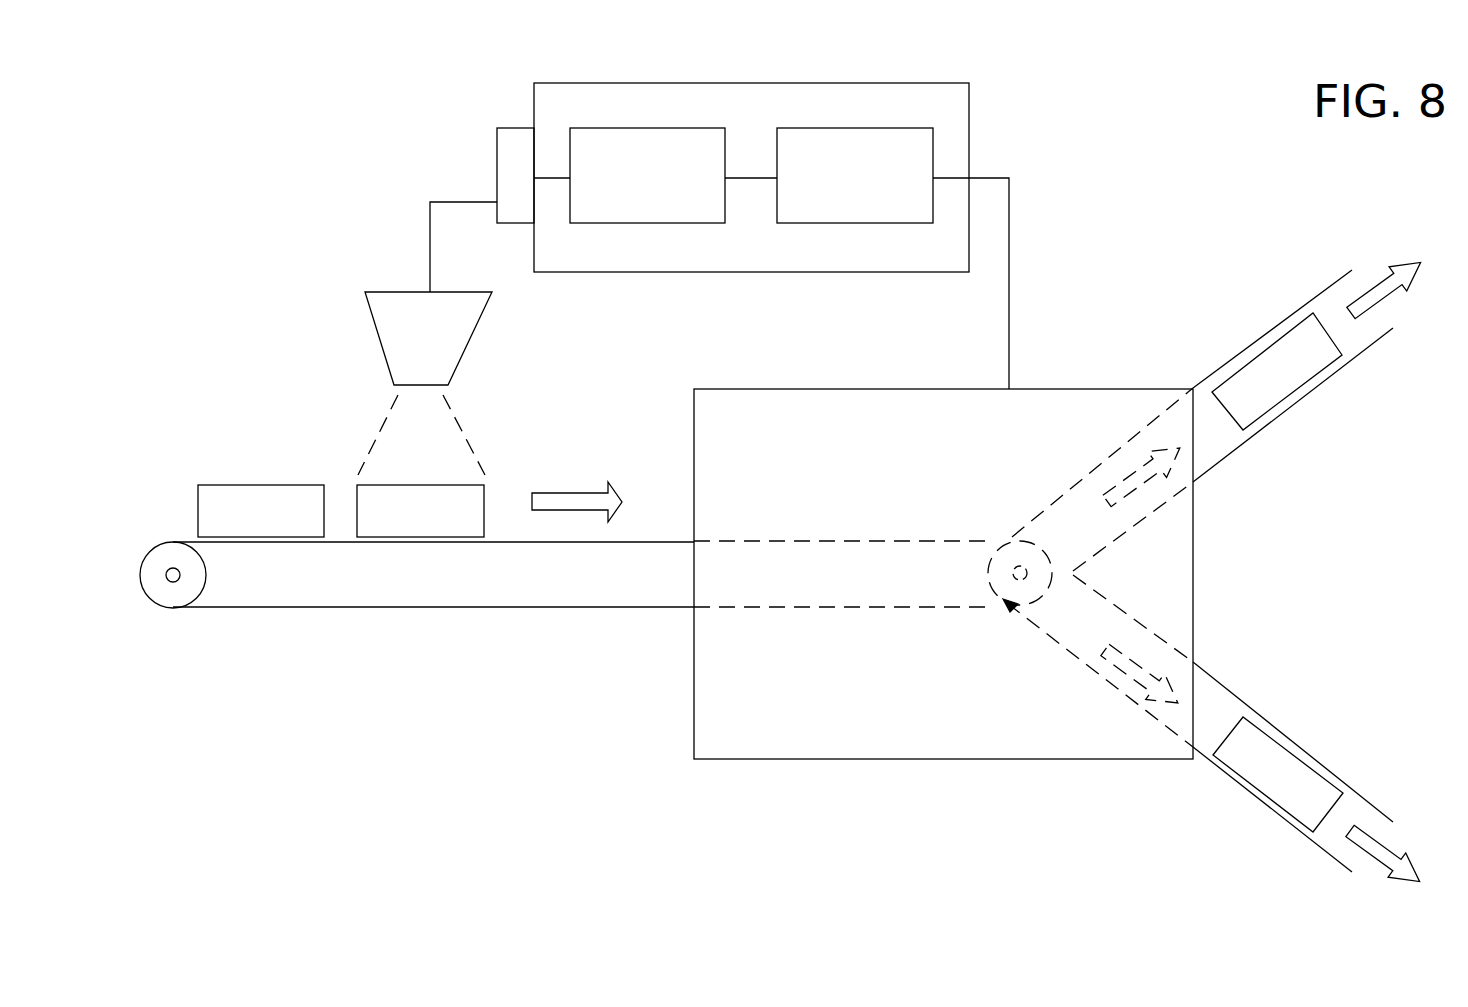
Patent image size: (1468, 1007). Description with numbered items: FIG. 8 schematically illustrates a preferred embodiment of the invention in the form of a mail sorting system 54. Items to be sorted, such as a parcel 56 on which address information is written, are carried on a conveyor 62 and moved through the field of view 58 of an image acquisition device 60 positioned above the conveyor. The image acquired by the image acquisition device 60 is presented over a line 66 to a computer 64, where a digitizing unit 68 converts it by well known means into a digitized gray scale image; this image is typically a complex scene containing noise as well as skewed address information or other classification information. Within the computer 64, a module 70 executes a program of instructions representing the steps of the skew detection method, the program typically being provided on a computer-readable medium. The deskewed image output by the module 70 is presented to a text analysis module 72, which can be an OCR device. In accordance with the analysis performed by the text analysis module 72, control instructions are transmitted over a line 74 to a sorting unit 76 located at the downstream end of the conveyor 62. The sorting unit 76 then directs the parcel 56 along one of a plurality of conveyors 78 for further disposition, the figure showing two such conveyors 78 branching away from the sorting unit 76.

The mail sorting system 54 is at (322, 699).
The parcel 56 is at (355, 500).
The field of view 58 is at (458, 425).
The image acquisition device 60 is at (457, 340).
The conveyor 62 is at (547, 607).
The computer 64 is at (751, 158).
The line 66 is at (430, 228).
The digitizing unit 68 is at (497, 145).
The module 70 is at (650, 189).
The text analysis module 72 is at (841, 189).
The line 74 is at (1009, 228).
The sorting unit 76 is at (1007, 759).
The conveyors 78 is at (1242, 445).